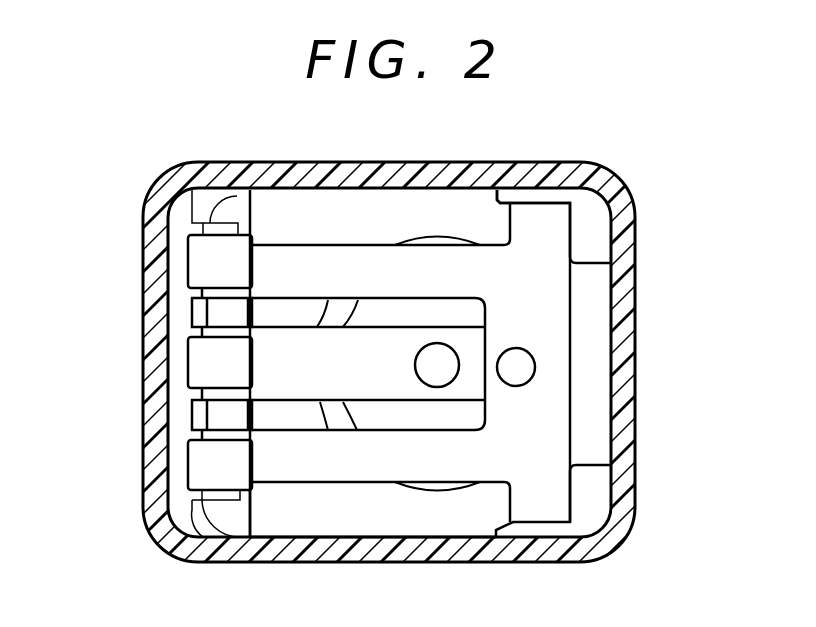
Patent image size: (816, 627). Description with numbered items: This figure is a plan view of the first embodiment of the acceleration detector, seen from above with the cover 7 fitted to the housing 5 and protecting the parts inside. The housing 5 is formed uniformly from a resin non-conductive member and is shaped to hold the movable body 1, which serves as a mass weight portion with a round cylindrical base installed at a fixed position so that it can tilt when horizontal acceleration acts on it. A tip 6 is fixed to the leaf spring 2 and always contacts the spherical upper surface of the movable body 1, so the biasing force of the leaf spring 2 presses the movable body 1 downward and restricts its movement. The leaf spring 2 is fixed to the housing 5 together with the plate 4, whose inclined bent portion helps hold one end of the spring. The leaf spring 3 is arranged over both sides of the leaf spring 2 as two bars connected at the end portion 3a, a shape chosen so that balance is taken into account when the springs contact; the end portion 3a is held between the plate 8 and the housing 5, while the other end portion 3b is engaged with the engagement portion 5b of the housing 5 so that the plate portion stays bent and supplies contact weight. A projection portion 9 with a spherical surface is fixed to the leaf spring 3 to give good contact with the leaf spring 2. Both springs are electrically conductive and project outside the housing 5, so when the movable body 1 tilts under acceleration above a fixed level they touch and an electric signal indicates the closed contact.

The movable body 1 is at (403, 313).
The leaf spring 2 is at (385, 383).
The leaf spring 3 is at (483, 453).
The end portion 3a is at (255, 468).
The other end portion 3b is at (548, 228).
The plate 4 is at (195, 367).
The housing 5 is at (300, 513).
The engagement portion 5b is at (643, 376).
The tip 6 is at (447, 358).
The cover 7 is at (528, 550).
The plate 8 is at (208, 258).
The projection portion 9 is at (519, 368).